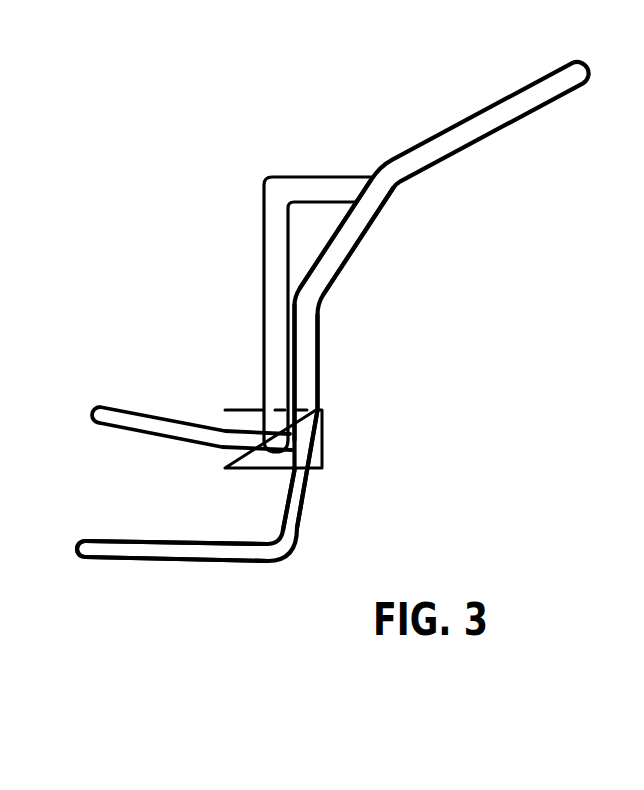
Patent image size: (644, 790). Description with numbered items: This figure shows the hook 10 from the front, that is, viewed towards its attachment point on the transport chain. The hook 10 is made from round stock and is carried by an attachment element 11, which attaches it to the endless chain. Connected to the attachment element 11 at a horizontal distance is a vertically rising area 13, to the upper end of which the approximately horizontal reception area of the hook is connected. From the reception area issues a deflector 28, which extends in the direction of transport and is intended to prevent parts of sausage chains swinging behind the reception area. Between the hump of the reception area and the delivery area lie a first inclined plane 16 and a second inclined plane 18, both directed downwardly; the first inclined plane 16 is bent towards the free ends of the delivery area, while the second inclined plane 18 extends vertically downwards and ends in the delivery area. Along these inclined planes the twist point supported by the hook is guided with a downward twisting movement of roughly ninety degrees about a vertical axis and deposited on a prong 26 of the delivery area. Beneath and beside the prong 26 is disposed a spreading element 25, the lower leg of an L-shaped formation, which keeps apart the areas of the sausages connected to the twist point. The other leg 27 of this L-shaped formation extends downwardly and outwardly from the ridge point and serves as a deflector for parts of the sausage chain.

The hook 10 is at (473, 267).
The attachment element 11 is at (240, 423).
The vertically rising area 13 is at (272, 258).
The first inclined plane 16 is at (338, 248).
The second inclined plane 18 is at (302, 358).
The spreading element 25 is at (135, 552).
The prong 26 is at (120, 417).
The leg of L-shaped formation 27 is at (296, 500).
The deflector 28 is at (487, 120).